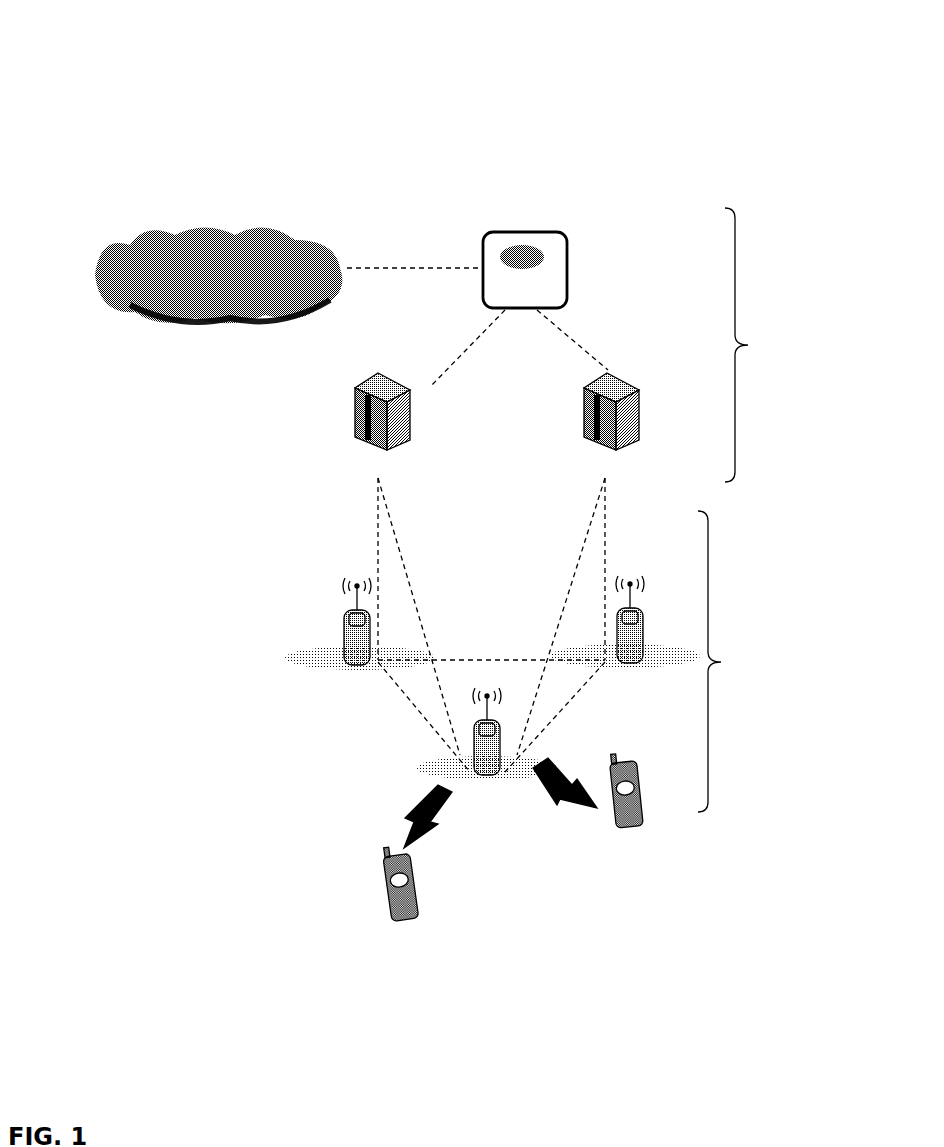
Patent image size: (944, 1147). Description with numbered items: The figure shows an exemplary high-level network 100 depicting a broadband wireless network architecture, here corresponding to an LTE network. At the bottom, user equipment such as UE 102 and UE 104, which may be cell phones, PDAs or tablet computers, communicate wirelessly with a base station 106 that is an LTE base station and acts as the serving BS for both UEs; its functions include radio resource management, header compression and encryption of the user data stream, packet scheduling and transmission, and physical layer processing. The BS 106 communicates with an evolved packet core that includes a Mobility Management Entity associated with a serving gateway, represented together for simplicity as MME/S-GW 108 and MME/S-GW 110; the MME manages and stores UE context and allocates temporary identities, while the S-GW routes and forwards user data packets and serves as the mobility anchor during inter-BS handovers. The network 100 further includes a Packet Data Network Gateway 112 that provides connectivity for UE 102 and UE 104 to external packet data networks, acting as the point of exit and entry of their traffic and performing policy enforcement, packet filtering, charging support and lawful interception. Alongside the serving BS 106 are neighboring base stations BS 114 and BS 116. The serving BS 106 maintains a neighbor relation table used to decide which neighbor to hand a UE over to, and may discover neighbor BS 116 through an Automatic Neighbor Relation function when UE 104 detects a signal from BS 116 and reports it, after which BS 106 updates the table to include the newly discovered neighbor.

The network 100 is at (338, 60).
The user equipment 102 is at (383, 875).
The user equipment 104 is at (640, 792).
The base station 106 is at (470, 738).
The MME/S-GW 108 is at (357, 411).
The MME/S-GW 110 is at (640, 413).
The Packet Data Network Gateway 112 is at (563, 270).
The base station 114 is at (345, 628).
The base station 116 is at (637, 630).